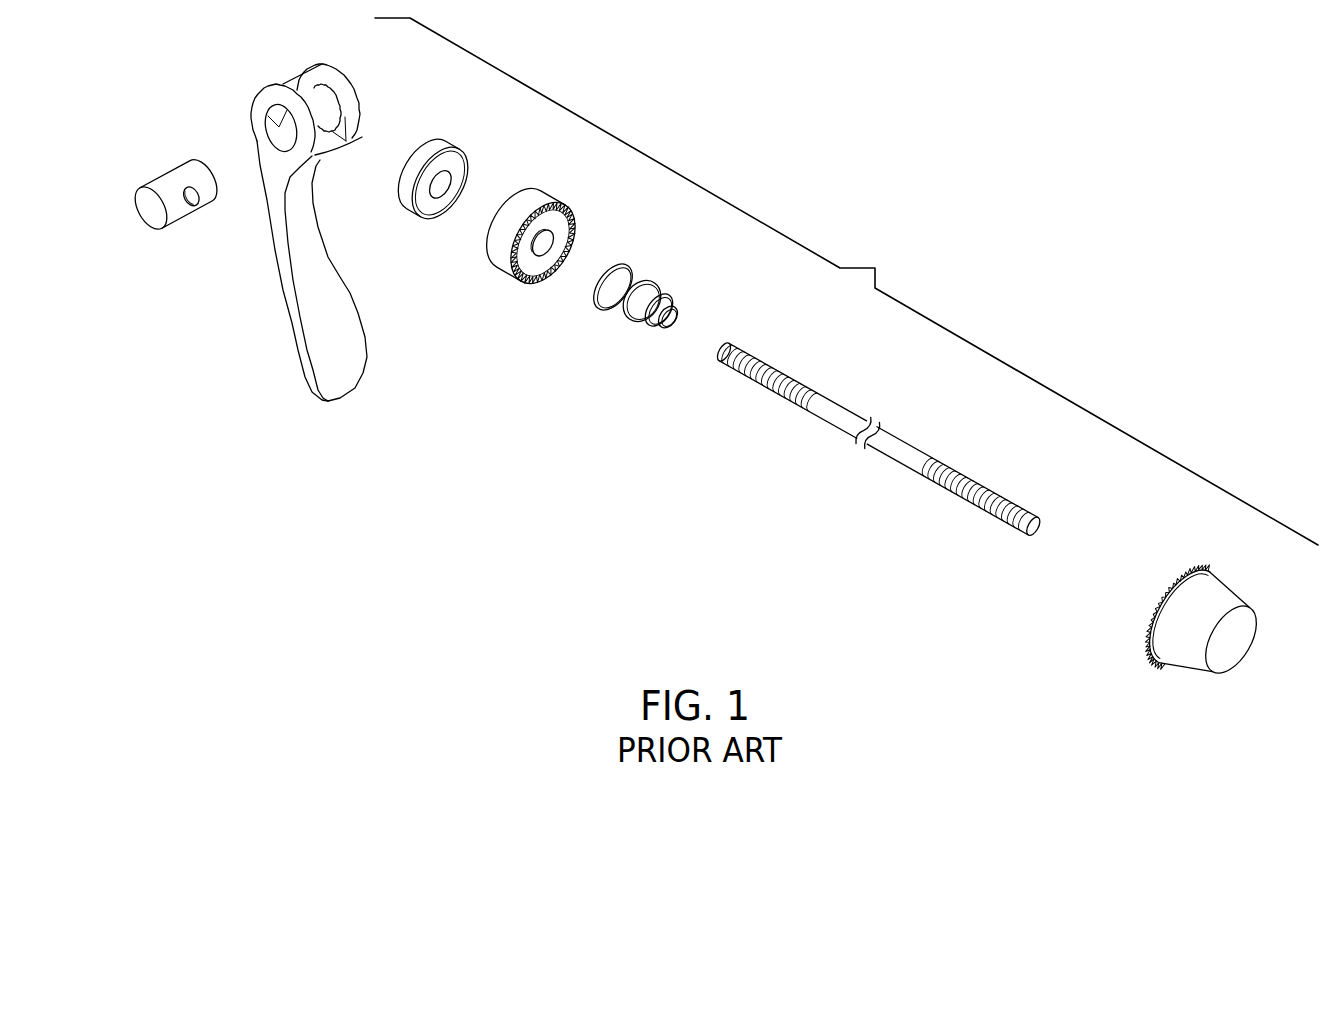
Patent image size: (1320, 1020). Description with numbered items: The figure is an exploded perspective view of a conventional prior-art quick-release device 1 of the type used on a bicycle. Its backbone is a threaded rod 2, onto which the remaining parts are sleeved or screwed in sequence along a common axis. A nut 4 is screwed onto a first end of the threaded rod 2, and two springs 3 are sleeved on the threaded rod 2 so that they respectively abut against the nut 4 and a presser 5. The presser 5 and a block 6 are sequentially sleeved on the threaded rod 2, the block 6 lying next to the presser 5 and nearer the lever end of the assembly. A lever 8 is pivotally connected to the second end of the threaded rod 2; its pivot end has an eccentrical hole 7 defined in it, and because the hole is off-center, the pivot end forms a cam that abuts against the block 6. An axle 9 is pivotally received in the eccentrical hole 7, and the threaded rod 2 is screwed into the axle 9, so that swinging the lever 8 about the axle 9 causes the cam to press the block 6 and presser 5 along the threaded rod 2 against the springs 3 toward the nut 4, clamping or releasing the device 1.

The quick-release device 1 is at (1130, 331).
The threaded rod 2 is at (903, 457).
The spring 3 is at (633, 315).
The nut 4 is at (1172, 633).
The presser 5 is at (502, 253).
The block 6 is at (433, 143).
The eccentrical hole 7 is at (274, 122).
The lever 8 is at (286, 272).
The axle 9 is at (174, 207).